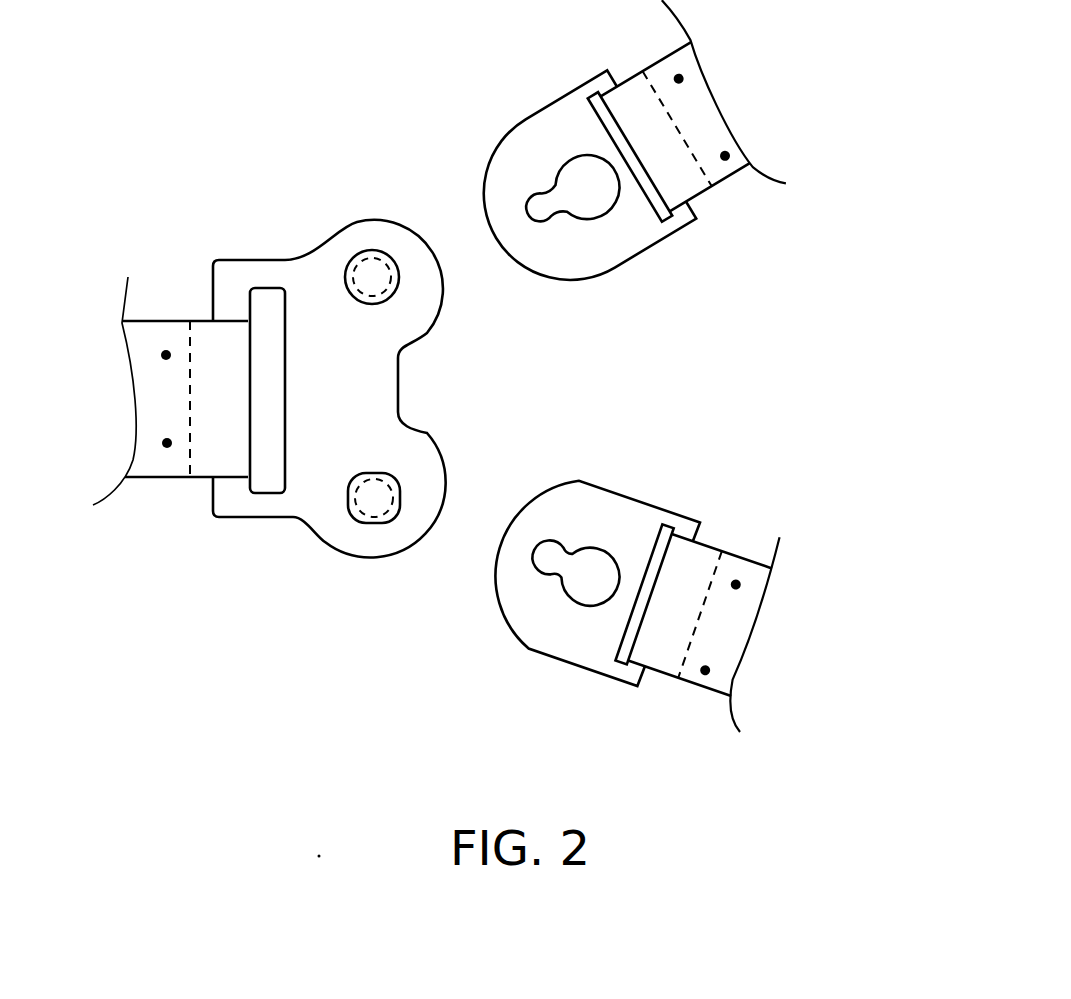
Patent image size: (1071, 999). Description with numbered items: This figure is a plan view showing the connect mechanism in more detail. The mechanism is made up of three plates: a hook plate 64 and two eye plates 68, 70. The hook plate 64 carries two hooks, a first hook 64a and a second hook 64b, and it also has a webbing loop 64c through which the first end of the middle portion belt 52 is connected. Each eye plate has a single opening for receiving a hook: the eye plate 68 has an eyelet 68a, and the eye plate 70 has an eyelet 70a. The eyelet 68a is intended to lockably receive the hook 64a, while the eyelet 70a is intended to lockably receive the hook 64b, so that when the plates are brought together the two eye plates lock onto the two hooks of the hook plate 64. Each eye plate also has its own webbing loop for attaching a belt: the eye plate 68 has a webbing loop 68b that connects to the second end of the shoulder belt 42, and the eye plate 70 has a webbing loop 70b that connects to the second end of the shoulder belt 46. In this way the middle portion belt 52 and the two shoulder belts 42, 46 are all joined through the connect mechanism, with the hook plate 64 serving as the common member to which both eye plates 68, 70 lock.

The shoulder belt 42 is at (727, 635).
The shoulder belt 46 is at (703, 118).
The middle portion belt 52 is at (213, 352).
The hook plate 64 is at (310, 277).
The hook 64a is at (350, 507).
The hook 64b is at (357, 255).
The webbing loop 64c is at (233, 490).
The eye plate 68 is at (553, 627).
The eyelet 68a is at (602, 567).
The webbing loop 68b is at (630, 687).
The eye plate 70 is at (612, 245).
The eyelet 70a is at (552, 200).
The webbing loop 70b is at (688, 215).